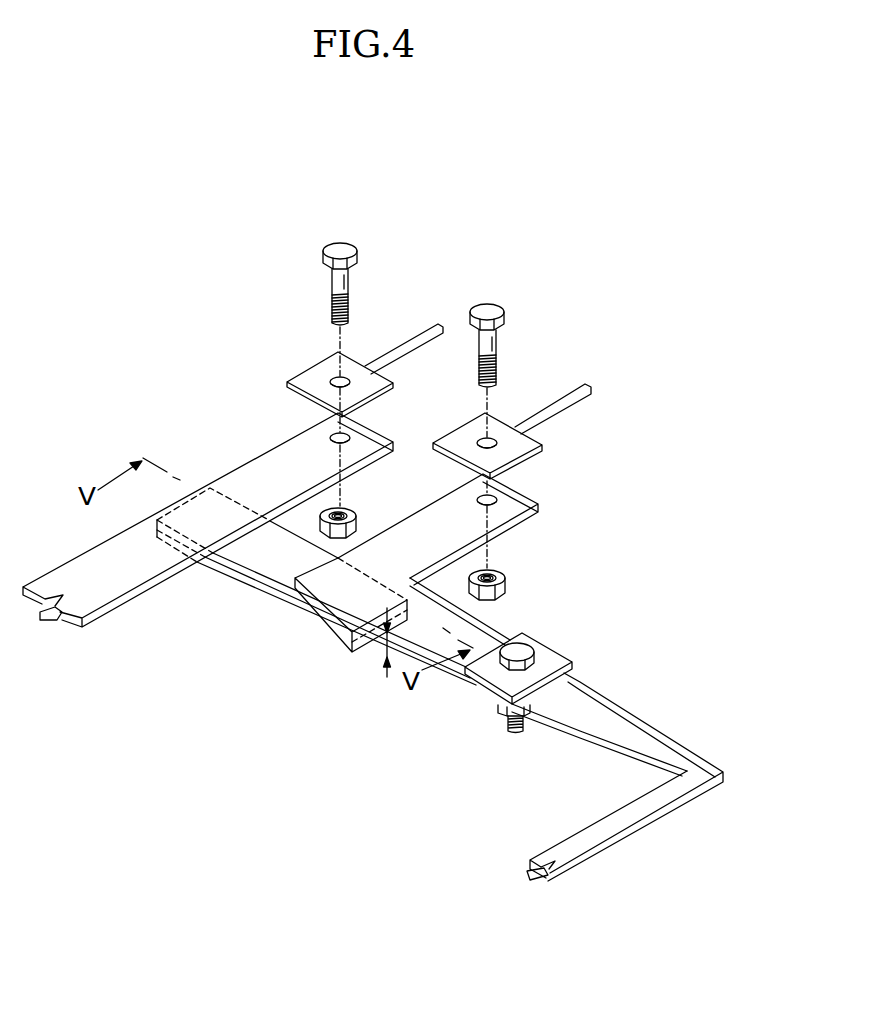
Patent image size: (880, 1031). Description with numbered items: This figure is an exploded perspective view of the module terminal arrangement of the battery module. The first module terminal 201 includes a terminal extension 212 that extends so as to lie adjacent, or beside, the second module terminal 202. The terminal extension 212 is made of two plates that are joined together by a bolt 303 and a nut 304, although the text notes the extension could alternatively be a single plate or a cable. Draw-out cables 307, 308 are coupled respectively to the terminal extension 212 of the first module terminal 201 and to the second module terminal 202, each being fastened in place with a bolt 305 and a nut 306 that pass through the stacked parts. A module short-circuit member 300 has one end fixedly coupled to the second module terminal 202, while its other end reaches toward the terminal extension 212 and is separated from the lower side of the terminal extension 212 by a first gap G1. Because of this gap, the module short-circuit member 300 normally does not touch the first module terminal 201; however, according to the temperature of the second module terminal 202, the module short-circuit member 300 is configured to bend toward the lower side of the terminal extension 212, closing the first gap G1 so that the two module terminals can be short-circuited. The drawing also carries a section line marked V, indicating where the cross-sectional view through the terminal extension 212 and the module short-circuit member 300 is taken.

The second module terminal 202 is at (248, 468).
The terminal extension 212 is at (510, 512).
The first module terminal 201 is at (530, 677).
The module short-circuit member 300 is at (268, 567).
The bolt 303 is at (522, 652).
The nut 304 is at (503, 718).
The bolt 305 is at (342, 257).
The nut 306 is at (352, 511).
The draw-out cable 307 is at (425, 338).
The draw-out cable 308 is at (573, 397).
The first gap G1 is at (376, 653).